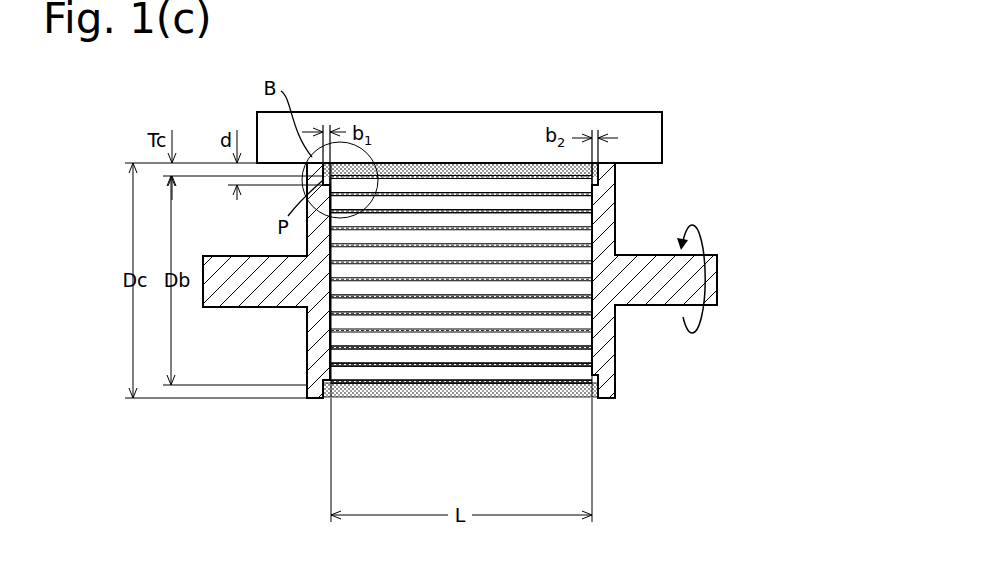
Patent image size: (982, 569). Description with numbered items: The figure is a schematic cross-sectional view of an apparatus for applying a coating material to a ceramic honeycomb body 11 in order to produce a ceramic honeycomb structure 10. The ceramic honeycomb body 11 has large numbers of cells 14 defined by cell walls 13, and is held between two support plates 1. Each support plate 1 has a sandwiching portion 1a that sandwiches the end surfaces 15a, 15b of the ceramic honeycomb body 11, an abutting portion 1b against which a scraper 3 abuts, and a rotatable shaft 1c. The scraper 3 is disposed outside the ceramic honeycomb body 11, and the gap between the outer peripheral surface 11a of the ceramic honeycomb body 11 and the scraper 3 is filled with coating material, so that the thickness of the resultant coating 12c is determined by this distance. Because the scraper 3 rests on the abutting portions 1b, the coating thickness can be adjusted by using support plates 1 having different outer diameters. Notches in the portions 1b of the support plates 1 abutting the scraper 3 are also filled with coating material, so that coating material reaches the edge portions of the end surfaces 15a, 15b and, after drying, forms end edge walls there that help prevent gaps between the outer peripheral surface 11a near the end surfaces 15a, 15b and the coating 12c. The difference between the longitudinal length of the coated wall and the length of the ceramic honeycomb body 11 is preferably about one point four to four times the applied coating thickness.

The support plate 1 is at (728, 107).
The sandwiching portion 1a is at (607, 213).
The abutting portion 1b is at (605, 162).
The rotatable shaft 1c is at (652, 280).
The scraper 3 is at (422, 125).
The ceramic honeycomb structure 10 is at (372, 452).
The ceramic honeycomb body 11 is at (497, 223).
The outer peripheral surface 11a is at (480, 388).
The coating 12c is at (532, 390).
The cell wall 13 is at (390, 350).
The cell 14 is at (437, 358).
The end surface 15a is at (330, 352).
The end surface 15b is at (593, 338).